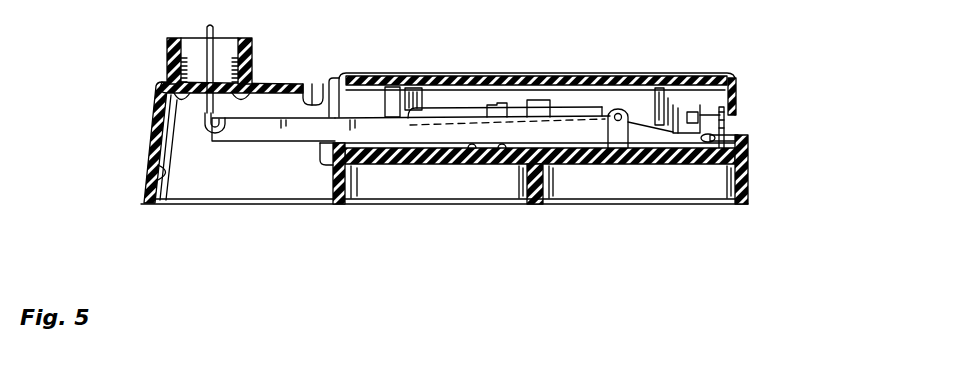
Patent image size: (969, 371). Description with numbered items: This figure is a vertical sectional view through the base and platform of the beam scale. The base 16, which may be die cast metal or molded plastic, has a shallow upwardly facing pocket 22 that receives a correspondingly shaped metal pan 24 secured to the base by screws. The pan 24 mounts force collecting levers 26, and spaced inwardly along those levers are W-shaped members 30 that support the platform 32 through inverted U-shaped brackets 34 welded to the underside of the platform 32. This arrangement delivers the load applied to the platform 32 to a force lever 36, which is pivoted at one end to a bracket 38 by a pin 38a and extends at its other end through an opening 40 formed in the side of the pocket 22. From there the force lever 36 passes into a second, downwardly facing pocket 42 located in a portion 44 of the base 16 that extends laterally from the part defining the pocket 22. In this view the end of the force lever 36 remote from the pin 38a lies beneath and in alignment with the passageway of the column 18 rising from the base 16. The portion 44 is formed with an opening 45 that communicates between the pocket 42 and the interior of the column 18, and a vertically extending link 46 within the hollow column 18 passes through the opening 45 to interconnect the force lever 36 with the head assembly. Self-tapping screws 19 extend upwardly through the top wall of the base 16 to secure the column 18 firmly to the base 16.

The base 16 is at (748, 177).
The column 18 is at (168, 62).
The screws 19 is at (162, 97).
The pocket 22 is at (735, 139).
The pan 24 is at (724, 116).
The force collecting levers 26 is at (446, 108).
The W-shaped members 30 is at (668, 92).
The platform 32 is at (742, 75).
The inverted U-shaped brackets 34 is at (378, 86).
The force lever 36 is at (272, 128).
The bracket 38 is at (610, 122).
The pin 38a is at (618, 110).
The opening 40 is at (325, 90).
The second pocket 42 is at (152, 172).
The portion of the base 44 is at (160, 120).
The opening 45 is at (192, 96).
The link 46 is at (207, 30).